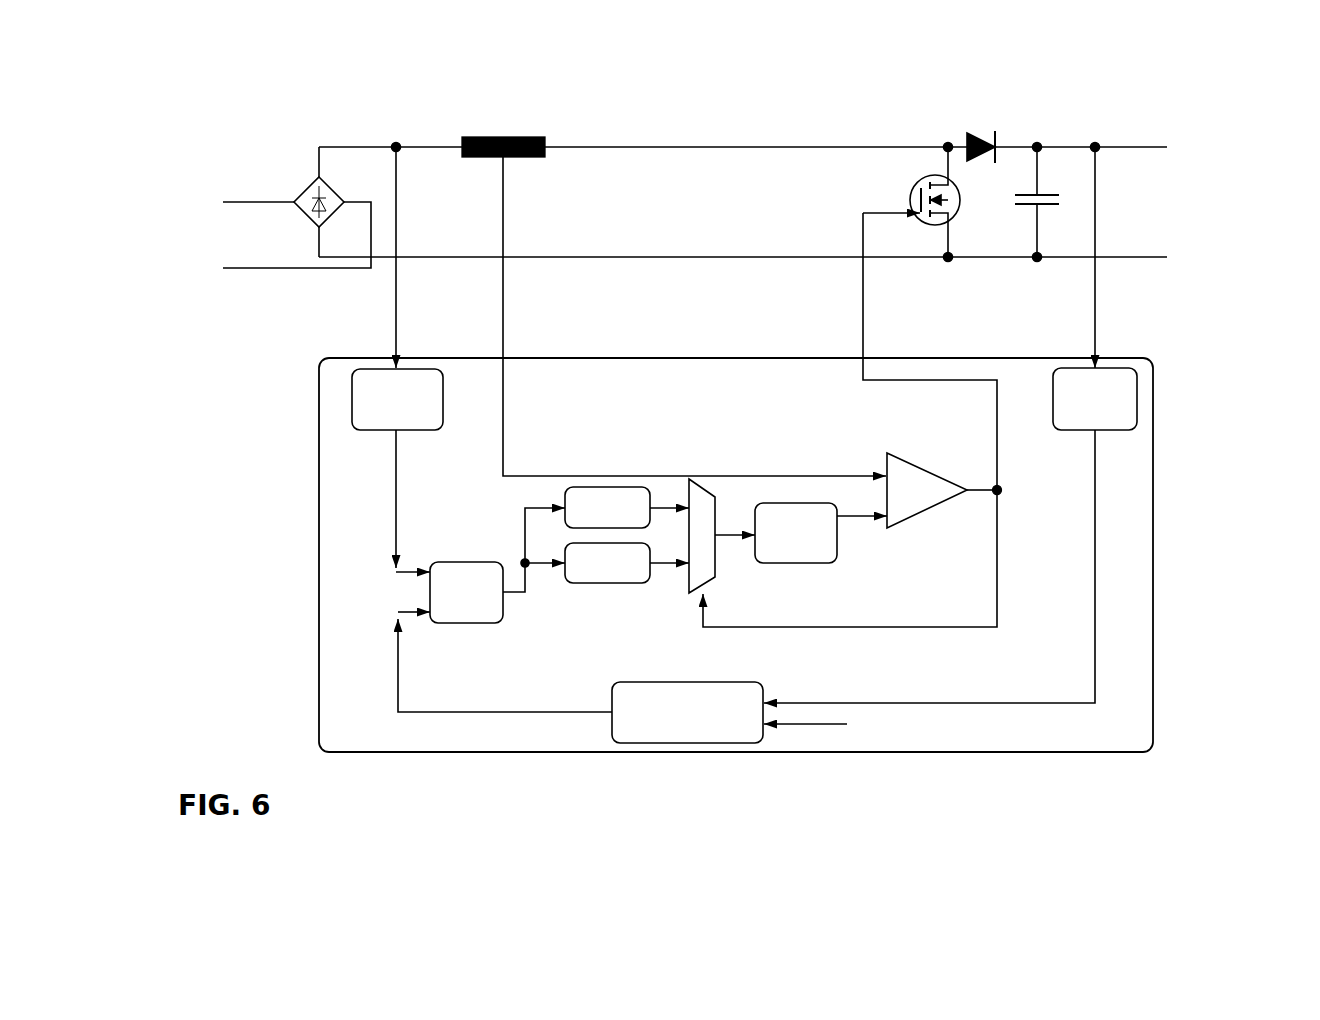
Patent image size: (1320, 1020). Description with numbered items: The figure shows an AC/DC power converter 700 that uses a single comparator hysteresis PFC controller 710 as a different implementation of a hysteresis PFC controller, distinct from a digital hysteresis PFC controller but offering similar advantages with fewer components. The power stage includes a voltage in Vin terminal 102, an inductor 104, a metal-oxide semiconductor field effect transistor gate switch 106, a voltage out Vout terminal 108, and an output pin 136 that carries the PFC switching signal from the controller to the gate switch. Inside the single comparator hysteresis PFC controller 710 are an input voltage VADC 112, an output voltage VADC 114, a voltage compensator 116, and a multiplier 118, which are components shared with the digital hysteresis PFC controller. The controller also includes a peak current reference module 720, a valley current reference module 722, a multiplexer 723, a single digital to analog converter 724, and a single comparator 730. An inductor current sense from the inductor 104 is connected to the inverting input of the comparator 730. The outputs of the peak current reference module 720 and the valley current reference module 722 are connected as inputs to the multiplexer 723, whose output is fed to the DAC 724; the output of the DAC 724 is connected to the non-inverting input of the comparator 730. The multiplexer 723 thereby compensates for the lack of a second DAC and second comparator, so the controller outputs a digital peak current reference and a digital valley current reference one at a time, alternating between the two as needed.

The AC/DC power converter 700 is at (675, 255).
The voltage in Vin terminal 102 is at (269, 201).
The inductor 104 is at (498, 119).
The MOSFET gate switch 106 is at (893, 202).
The voltage out Vout terminal 108 is at (1128, 175).
The input voltage VADC 112 is at (339, 470).
The output voltage VADC 114 is at (1005, 535).
The voltage compensator 116 is at (622, 714).
The multiplier 118 is at (495, 555).
The output pin 136 is at (850, 420).
The single comparator hysteresis PFC controller 710 is at (669, 555).
The peak current reference module 720 is at (616, 470).
The valley current reference module 722 is at (627, 597).
The multiplexer 723 is at (716, 493).
The digital to analog converter 724 is at (815, 492).
The comparator 730 is at (944, 476).